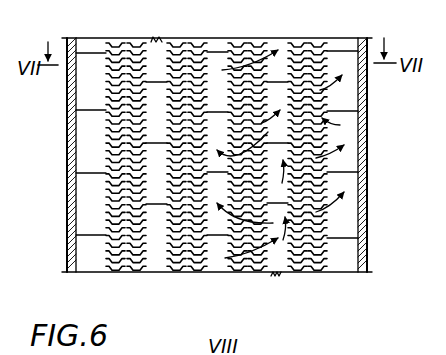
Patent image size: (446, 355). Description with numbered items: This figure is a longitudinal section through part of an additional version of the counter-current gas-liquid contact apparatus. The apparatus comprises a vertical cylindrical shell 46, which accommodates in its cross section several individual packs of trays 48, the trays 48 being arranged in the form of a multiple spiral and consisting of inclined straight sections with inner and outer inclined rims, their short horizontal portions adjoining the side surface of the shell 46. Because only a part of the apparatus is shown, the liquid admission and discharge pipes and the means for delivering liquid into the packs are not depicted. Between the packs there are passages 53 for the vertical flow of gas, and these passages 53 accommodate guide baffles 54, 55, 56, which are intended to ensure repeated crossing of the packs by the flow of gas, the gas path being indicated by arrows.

The vertical cylindrical shell 46 is at (368, 197).
The trays 48 is at (240, 36).
The passages 53 is at (83, 142).
The guide baffle 54 is at (218, 52).
The guide baffle 55 is at (153, 82).
The guide baffle 56 is at (90, 53).